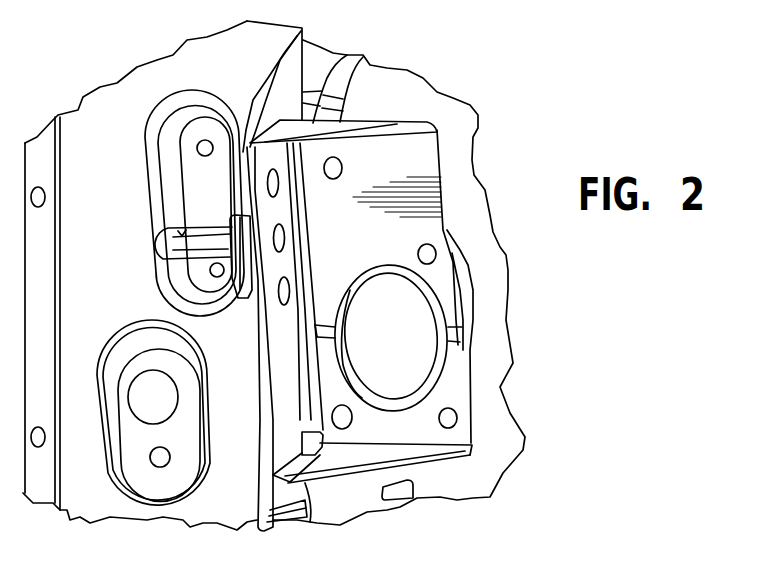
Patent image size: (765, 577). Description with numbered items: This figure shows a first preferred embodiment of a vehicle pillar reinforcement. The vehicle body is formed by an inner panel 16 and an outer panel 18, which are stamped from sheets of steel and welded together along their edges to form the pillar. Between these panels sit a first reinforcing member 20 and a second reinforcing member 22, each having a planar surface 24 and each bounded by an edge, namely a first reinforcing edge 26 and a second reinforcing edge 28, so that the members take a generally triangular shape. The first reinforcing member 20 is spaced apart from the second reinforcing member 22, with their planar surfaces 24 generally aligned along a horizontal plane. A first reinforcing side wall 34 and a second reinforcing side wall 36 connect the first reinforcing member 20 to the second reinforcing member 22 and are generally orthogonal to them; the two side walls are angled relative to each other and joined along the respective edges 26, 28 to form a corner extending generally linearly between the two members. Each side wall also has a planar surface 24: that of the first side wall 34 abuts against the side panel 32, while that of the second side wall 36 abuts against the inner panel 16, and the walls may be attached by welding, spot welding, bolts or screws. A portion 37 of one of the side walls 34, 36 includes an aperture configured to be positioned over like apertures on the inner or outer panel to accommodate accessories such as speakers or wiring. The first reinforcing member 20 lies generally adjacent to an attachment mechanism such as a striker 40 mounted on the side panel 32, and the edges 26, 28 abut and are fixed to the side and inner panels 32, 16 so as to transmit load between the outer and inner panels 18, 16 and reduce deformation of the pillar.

The inner panel 16 is at (423, 90).
The outer panel 18 is at (143, 77).
The first reinforcing member 20 is at (347, 55).
The second reinforcing member 22 is at (347, 483).
The planar surface 24 is at (397, 297).
The first reinforcing edge 26 is at (440, 132).
The second reinforcing edge 28 is at (257, 480).
The side panel 32 is at (292, 77).
The first reinforcing side wall 34 is at (255, 360).
The second reinforcing side wall 36 is at (408, 228).
The portion 37 is at (448, 323).
The striker 40 is at (163, 260).